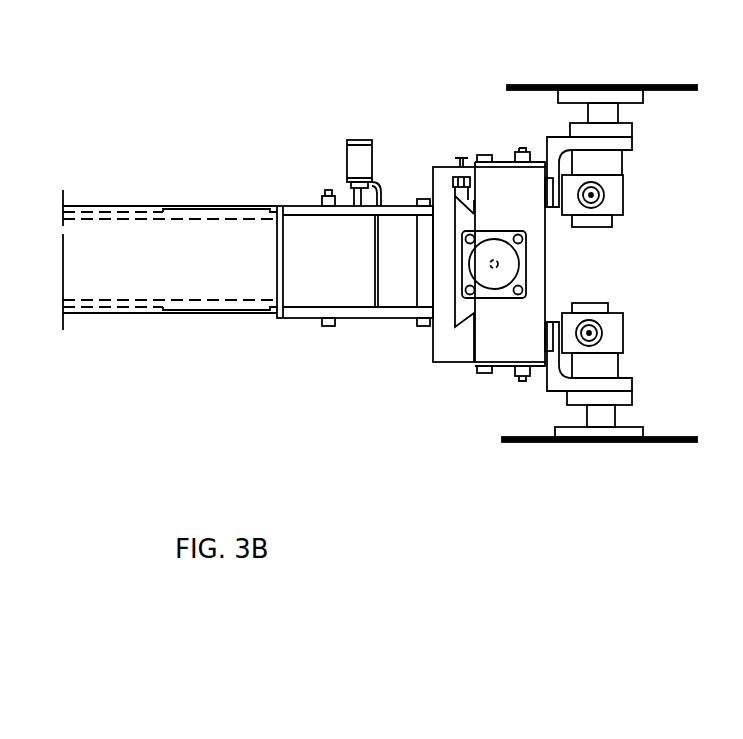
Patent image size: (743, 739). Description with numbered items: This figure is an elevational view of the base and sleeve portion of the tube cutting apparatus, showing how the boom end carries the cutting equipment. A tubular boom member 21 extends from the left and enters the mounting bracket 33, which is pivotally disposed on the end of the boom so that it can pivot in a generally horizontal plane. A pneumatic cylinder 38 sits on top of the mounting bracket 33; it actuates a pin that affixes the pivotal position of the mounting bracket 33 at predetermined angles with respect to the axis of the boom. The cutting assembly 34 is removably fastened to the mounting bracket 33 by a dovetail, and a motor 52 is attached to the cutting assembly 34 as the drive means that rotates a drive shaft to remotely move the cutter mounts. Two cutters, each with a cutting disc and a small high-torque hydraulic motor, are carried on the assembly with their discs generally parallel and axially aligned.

The tubular boom member 21 is at (201, 206).
The mounting bracket 33 is at (413, 186).
The pneumatic cylinder 38 is at (360, 152).
The cutting assembly 34 is at (540, 258).
The motor 52 is at (480, 268).